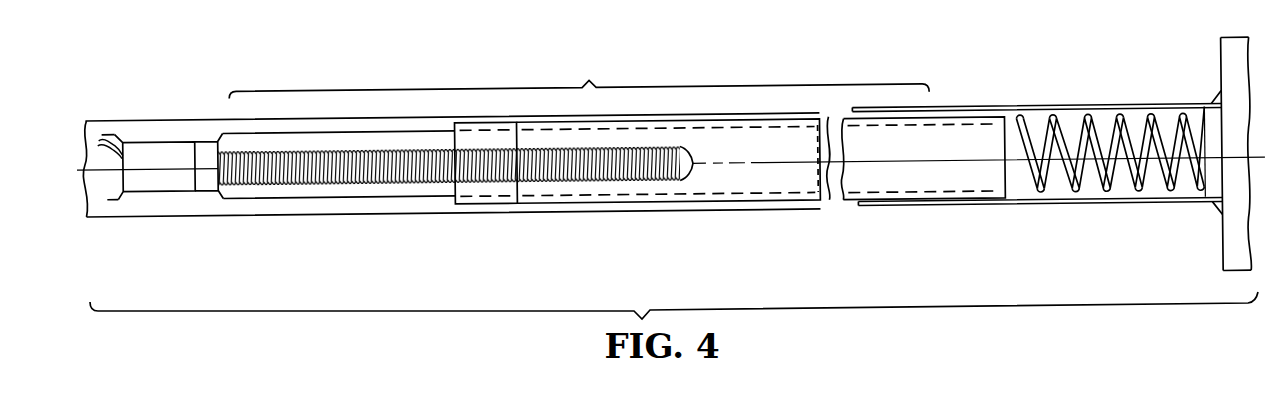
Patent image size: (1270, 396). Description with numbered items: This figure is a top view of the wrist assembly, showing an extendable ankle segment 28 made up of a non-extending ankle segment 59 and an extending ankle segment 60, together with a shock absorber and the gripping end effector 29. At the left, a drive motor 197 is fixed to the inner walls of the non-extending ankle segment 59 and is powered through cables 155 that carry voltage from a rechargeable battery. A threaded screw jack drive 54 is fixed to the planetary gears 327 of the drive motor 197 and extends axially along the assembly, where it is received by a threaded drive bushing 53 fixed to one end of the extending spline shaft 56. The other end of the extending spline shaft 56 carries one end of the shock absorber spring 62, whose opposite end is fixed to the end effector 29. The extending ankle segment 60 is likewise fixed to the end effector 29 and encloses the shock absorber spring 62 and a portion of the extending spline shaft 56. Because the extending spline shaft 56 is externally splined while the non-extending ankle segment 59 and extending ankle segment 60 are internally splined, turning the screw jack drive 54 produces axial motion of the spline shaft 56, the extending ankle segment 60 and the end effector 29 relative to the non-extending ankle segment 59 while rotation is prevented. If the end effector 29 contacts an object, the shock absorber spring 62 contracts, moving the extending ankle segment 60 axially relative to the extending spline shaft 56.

The extendable ankle segment 28 is at (579, 73).
The end effector 29 is at (1221, 83).
The threaded drive bushing 53 is at (482, 128).
The threaded screw jack drive 54 is at (383, 159).
The extending spline shaft 56 is at (737, 190).
The non-extending ankle segment 59 is at (353, 218).
The extending ankle segment 60 is at (923, 217).
The shock absorber spring 62 is at (1102, 200).
The cables 155 is at (111, 134).
The drive motor 197 is at (163, 193).
The planetary gears 327 is at (205, 190).